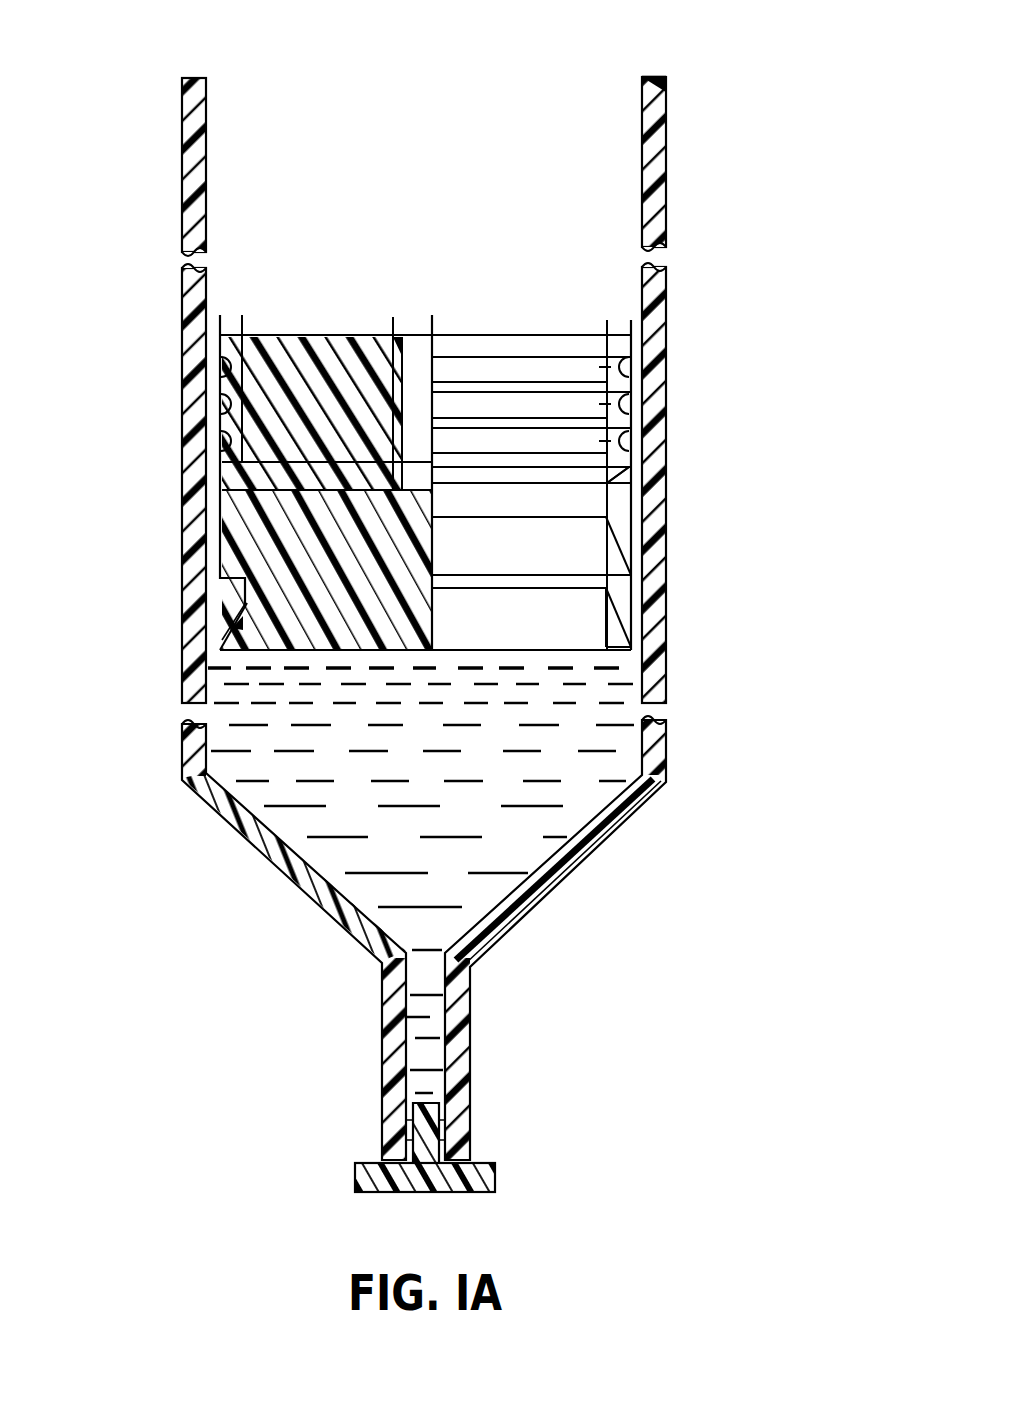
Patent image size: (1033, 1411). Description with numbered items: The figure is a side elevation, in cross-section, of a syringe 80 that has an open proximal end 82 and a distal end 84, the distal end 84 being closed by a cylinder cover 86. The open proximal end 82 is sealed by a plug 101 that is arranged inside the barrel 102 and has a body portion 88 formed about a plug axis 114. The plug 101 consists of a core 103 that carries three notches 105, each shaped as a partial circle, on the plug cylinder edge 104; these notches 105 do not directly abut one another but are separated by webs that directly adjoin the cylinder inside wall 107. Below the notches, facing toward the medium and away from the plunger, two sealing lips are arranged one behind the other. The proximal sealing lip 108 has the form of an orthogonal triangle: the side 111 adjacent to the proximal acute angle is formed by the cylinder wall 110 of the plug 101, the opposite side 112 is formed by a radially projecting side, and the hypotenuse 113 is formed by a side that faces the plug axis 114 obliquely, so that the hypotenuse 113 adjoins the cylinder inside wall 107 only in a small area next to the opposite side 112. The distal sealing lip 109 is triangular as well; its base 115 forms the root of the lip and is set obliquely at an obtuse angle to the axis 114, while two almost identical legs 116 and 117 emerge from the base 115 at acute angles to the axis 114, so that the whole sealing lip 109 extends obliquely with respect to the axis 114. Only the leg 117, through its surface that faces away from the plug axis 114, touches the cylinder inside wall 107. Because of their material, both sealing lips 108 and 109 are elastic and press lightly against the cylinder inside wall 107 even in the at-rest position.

The syringe 80 is at (172, 488).
The proximal end 82 is at (652, 78).
The distal end 84 is at (468, 1152).
The cylinder cover 86 is at (493, 1183).
The body portion 88 is at (517, 559).
The plug 101 is at (547, 346).
The barrel 102 is at (664, 236).
The core 103 is at (421, 348).
The plug cylinder edge 104 is at (640, 318).
The notches 105 is at (636, 441).
The cylinder inside wall 107 is at (197, 212).
The proximal sealing lip 108 is at (630, 534).
The distal sealing lip 109 is at (630, 622).
The cylinder wall 110 is at (618, 475).
The side 111 is at (632, 508).
The opposite side 112 is at (630, 576).
The hypotenuse 113 is at (630, 560).
The plug axis 114 is at (432, 315).
The base 115 is at (267, 598).
The leg 116 is at (247, 600).
The leg 117 is at (260, 613).